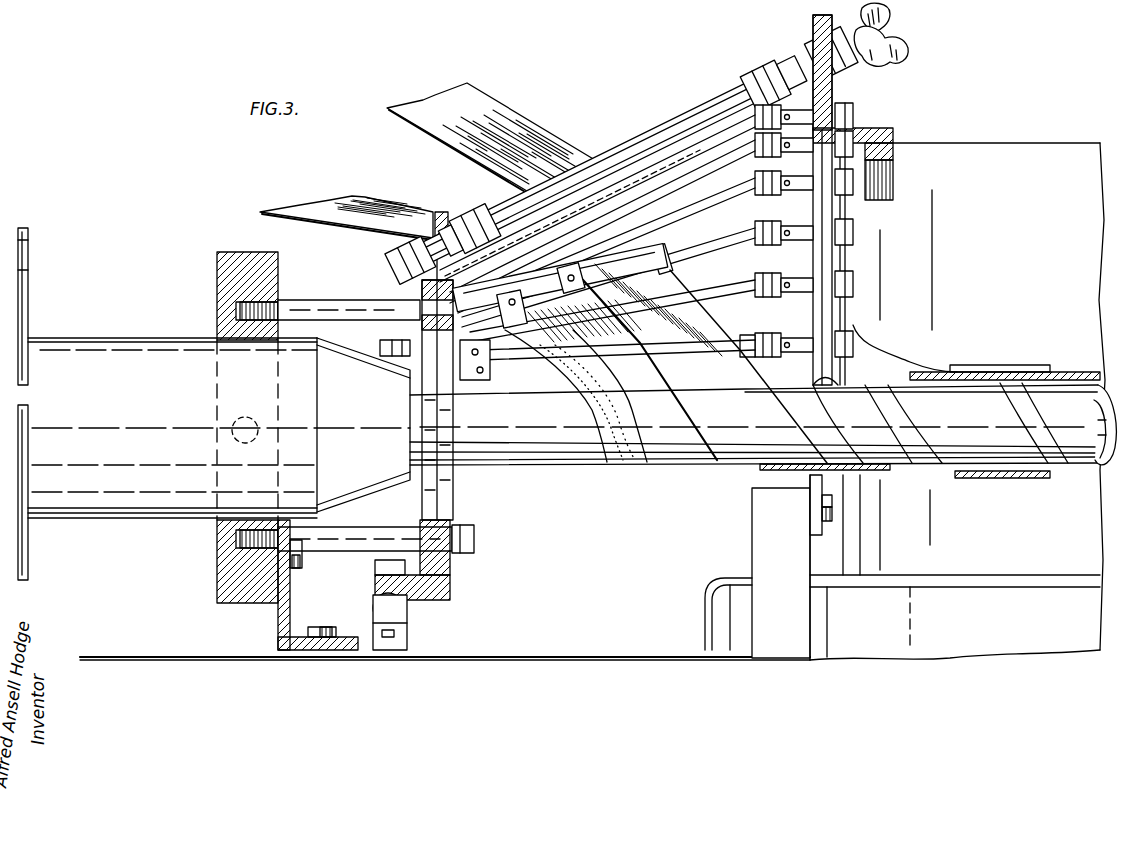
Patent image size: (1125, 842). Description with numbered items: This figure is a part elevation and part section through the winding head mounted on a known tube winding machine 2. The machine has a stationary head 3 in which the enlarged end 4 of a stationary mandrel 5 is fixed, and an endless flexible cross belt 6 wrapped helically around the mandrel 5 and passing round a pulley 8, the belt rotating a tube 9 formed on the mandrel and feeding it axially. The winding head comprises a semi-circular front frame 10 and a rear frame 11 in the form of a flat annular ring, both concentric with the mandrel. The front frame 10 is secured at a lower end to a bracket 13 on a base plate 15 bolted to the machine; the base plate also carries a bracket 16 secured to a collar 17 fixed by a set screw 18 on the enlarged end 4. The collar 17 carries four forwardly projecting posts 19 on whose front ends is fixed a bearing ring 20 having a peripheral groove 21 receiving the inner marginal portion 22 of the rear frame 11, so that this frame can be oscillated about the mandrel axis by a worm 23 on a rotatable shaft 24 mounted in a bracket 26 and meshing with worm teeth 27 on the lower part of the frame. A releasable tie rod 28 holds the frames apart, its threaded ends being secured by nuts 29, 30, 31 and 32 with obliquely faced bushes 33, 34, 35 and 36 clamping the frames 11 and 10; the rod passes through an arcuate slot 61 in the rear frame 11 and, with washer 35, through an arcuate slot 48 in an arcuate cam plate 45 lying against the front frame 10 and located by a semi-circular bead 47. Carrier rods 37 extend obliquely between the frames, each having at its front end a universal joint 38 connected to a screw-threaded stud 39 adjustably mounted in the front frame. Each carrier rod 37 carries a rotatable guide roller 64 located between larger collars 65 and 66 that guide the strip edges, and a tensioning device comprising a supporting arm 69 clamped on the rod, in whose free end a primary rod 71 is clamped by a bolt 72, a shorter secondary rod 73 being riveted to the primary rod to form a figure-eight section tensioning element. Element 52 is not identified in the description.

The tube winding machine 2 is at (30, 548).
The stationary head 3 is at (28, 305).
The enlarged end of the mandrel 4 is at (219, 428).
The stationary mandrel 5 is at (553, 446).
The endless cross belt 6 is at (925, 360).
The pulley 8 is at (965, 143).
The tube 9 is at (1080, 372).
The front frame 10 is at (813, 18).
The rear frame 11 is at (440, 208).
The bracket 13 is at (782, 517).
The base plate 15 is at (487, 656).
The bracket 16 is at (282, 625).
The collar 17 is at (230, 545).
The set screw 18 is at (238, 440).
The post 19 is at (300, 306).
The bearing ring 20 is at (452, 522).
The peripheral groove 21 is at (452, 562).
The inner marginal portion 22 is at (445, 578).
The worm 23 is at (403, 608).
The rotatable shaft 24 is at (352, 620).
The bracket 26 is at (400, 645).
The worm teeth 27 is at (376, 600).
The tie rod 28 is at (690, 127).
The nut 29 is at (392, 262).
The nut 30 is at (482, 222).
The nut 31 is at (773, 82).
The nut 32 is at (905, 44).
The bush 33 is at (425, 248).
The bush 34 is at (464, 226).
The washer 35 is at (810, 62).
The bush 36 is at (846, 77).
The carrier rod 37 is at (696, 265).
The universal joint 38 is at (767, 332).
The screw-threaded stud 39 is at (850, 108).
The arcuate cam plate 45 is at (848, 125).
The semi-circular bead 47 is at (735, 200).
The arcuate slot 48 is at (890, 14).
The block 52 is at (893, 190).
The arcuate slot 61 is at (440, 212).
The guide roller 64 is at (705, 363).
The collar 65 is at (665, 258).
The collar 66 is at (582, 278).
The supporting arm 69 is at (598, 302).
The primary rod 71 is at (660, 195).
The bolt 72 is at (565, 185).
The secondary rod 73 is at (620, 168).